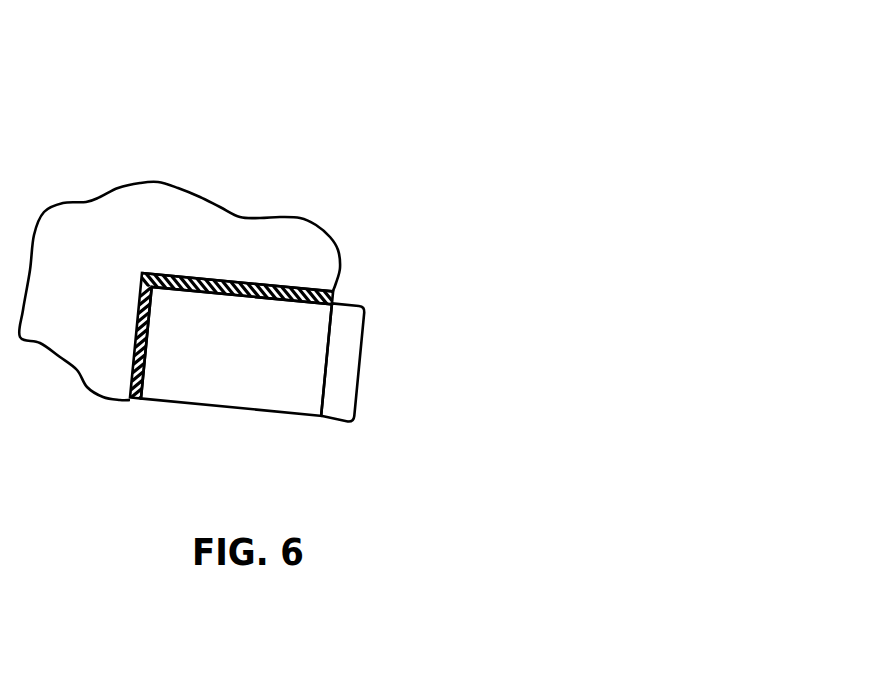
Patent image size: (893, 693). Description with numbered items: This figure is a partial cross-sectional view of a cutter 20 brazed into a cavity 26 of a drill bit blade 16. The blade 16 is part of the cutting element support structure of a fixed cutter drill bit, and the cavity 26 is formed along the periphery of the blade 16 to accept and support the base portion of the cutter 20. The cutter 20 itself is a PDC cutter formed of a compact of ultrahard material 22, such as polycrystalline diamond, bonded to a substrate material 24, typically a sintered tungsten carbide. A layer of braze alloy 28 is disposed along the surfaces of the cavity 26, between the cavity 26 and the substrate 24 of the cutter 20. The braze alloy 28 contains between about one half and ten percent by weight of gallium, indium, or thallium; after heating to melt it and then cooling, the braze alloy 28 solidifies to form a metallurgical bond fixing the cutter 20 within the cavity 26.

The blade 16 is at (243, 228).
The cutter 20 is at (339, 360).
The ultrahard material 22 is at (348, 368).
The substrate material 24 is at (297, 392).
The cavity 26 is at (291, 275).
The braze alloy 28 is at (290, 287).